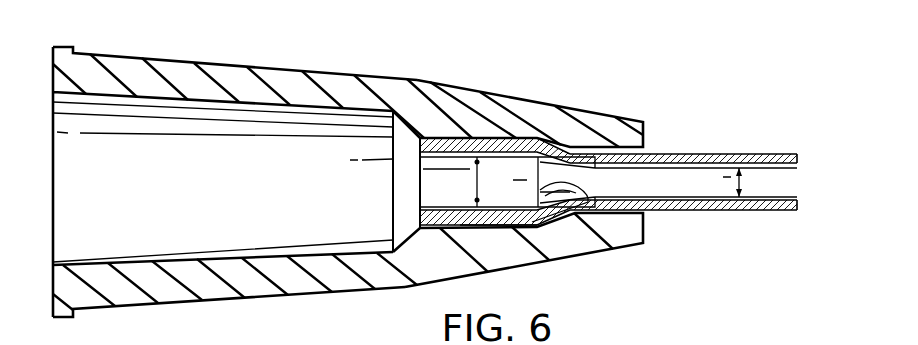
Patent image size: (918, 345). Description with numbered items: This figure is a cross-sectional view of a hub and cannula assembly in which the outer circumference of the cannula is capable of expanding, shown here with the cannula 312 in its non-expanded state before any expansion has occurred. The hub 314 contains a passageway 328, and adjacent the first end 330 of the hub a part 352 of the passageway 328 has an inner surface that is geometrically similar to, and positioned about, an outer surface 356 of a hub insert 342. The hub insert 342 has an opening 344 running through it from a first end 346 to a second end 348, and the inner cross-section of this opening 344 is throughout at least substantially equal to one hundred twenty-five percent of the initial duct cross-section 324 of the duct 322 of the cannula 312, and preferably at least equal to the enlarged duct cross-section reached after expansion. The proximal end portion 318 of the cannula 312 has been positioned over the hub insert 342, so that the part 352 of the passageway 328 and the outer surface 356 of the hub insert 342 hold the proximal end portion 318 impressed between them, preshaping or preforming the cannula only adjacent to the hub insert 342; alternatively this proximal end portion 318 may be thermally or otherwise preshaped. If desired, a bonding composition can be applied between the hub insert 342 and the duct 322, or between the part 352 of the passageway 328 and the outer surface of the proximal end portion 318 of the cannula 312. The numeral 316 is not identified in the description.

The cannula 312 is at (703, 153).
The hub 314 is at (263, 68).
The tapered rear housing section 316 is at (597, 110).
The proximal end portion 318 is at (478, 226).
The duct 322 is at (658, 192).
The initial duct cross-section 324 is at (739, 165).
The passageway 328 is at (174, 198).
The first end 330 is at (643, 130).
The hub insert 342 is at (405, 140).
The opening 344 is at (478, 178).
The first end 346 is at (582, 225).
The second end 348 is at (420, 179).
The part of the passageway 352 is at (627, 213).
The outer surface 356 is at (514, 226).